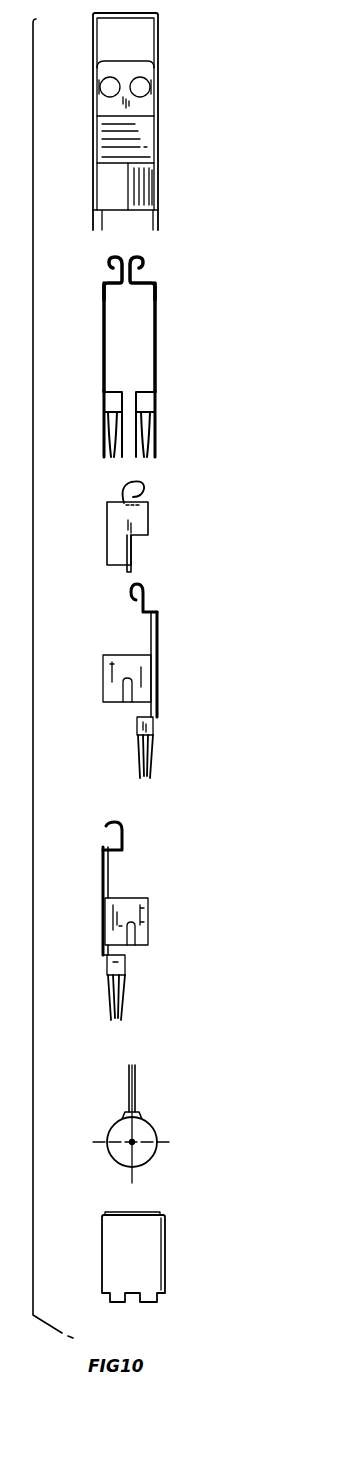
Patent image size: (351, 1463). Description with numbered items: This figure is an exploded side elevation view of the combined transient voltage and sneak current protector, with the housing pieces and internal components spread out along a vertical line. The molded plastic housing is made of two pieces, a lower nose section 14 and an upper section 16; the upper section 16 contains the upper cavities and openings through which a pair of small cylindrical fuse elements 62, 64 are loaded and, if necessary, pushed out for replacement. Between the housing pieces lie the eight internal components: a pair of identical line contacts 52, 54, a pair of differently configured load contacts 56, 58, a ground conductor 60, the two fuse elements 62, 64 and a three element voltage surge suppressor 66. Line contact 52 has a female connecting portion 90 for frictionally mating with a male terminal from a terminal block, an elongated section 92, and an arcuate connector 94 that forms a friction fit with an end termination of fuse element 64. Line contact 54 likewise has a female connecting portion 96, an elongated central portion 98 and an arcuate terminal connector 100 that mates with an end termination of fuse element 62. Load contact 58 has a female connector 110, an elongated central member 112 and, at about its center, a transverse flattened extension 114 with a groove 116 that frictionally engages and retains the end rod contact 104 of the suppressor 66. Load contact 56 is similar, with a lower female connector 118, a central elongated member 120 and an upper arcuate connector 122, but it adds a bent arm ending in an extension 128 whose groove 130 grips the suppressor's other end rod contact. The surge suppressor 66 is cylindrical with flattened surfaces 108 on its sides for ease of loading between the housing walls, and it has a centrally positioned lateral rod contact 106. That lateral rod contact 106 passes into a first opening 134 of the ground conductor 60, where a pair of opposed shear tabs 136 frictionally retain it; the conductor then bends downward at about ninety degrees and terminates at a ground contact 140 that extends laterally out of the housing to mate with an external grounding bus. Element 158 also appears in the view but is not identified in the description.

The lower nose section 14 is at (174, 1246).
The upper section 16 is at (140, 121).
The line contact 52 is at (82, 355).
The line contact 54 is at (172, 355).
The load contact 56 is at (151, 680).
The load contact 58 is at (129, 917).
The ground conductor 60 is at (138, 523).
The fuse element 62 is at (151, 85).
The fuse element 64 is at (101, 89).
The voltage surge suppressor 66 is at (133, 1124).
The female connecting portion 90 is at (156, 437).
The elongated section 92 is at (158, 357).
The arcuate connector 94 is at (150, 263).
The female connecting portion 96 is at (106, 431).
The elongated central portion 98 is at (101, 356).
The arcuate terminal connector 100 is at (107, 261).
The end rod contact 104 is at (123, 1148).
The lateral rod contact 106 is at (137, 1082).
The flattened surfaces 108 is at (106, 1140).
The female connector 110 is at (129, 990).
The elongated central member 112 is at (102, 894).
The transverse flattened extension 114 is at (128, 824).
The groove 116 is at (138, 930).
The lower female connector 118 is at (158, 753).
The central elongated member 120 is at (158, 644).
The upper arcuate connector 122 is at (155, 588).
The extension 128 is at (126, 652).
The groove 130 is at (122, 701).
The first opening 134 is at (152, 519).
The shear tabs 136 is at (141, 490).
The ground contact 140 is at (133, 552).
The body 158 is at (107, 522).